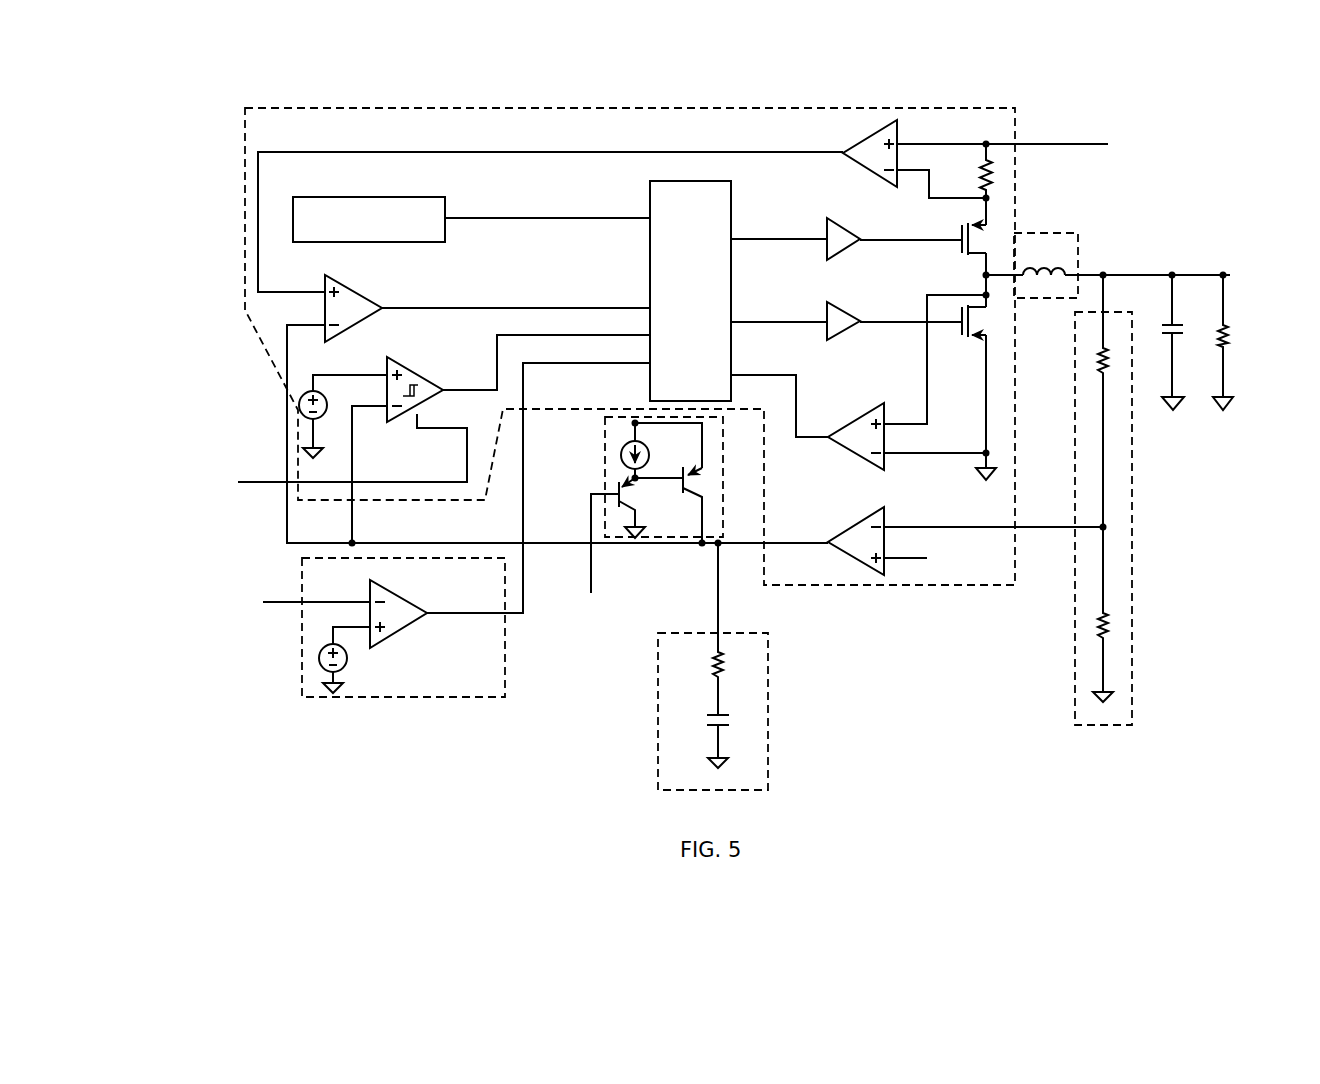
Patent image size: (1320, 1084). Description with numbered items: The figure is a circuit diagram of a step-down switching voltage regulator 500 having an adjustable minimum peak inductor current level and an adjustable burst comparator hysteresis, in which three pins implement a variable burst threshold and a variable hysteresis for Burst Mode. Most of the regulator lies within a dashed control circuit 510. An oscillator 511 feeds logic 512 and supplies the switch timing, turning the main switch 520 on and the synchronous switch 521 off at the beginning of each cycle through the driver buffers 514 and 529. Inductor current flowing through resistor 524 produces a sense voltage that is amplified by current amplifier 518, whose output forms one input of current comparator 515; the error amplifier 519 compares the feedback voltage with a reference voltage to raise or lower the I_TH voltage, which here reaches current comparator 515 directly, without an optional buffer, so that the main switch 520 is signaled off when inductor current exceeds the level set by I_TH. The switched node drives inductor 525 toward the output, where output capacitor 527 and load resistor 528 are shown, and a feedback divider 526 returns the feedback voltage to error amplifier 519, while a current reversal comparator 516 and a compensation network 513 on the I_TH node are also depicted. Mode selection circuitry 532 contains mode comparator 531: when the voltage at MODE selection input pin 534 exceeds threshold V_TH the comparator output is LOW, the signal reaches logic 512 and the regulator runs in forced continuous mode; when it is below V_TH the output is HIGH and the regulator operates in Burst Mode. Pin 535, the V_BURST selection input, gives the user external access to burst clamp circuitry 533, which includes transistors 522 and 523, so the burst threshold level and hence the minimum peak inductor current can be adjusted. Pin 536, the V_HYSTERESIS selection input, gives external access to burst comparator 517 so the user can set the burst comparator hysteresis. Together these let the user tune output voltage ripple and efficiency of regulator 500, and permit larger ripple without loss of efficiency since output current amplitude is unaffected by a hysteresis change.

The regulator 500 is at (891, 723).
The control circuit 510 is at (243, 135).
The oscillator 511 is at (362, 197).
The logic 512 is at (705, 322).
The compensation network 513 is at (770, 708).
The driver buffer 514 is at (848, 228).
The current comparator 515 is at (357, 291).
The current reversal comparator 516 is at (861, 415).
The burst comparator 517 is at (432, 383).
The current amplifier 518 is at (861, 137).
The error amplifier 519 is at (851, 561).
The main switch 520 is at (982, 240).
The synchronous switch 521 is at (982, 325).
The transistor 522 is at (634, 498).
The transistor 523 is at (696, 475).
The resistor 524 is at (1003, 185).
The inductor 525 is at (1056, 262).
The feedback resistor divider 526 is at (1134, 490).
The output capacitor 527 is at (1170, 322).
The load resistor 528 is at (1239, 337).
The driver buffer 529 is at (848, 310).
The mode comparator 531 is at (398, 637).
The mode selection circuitry 532 is at (450, 700).
The burst clamp circuitry 533 is at (723, 472).
The MODE selection input pin 534 is at (300, 605).
The pin 535 is at (575, 558).
The pin 536 is at (253, 481).